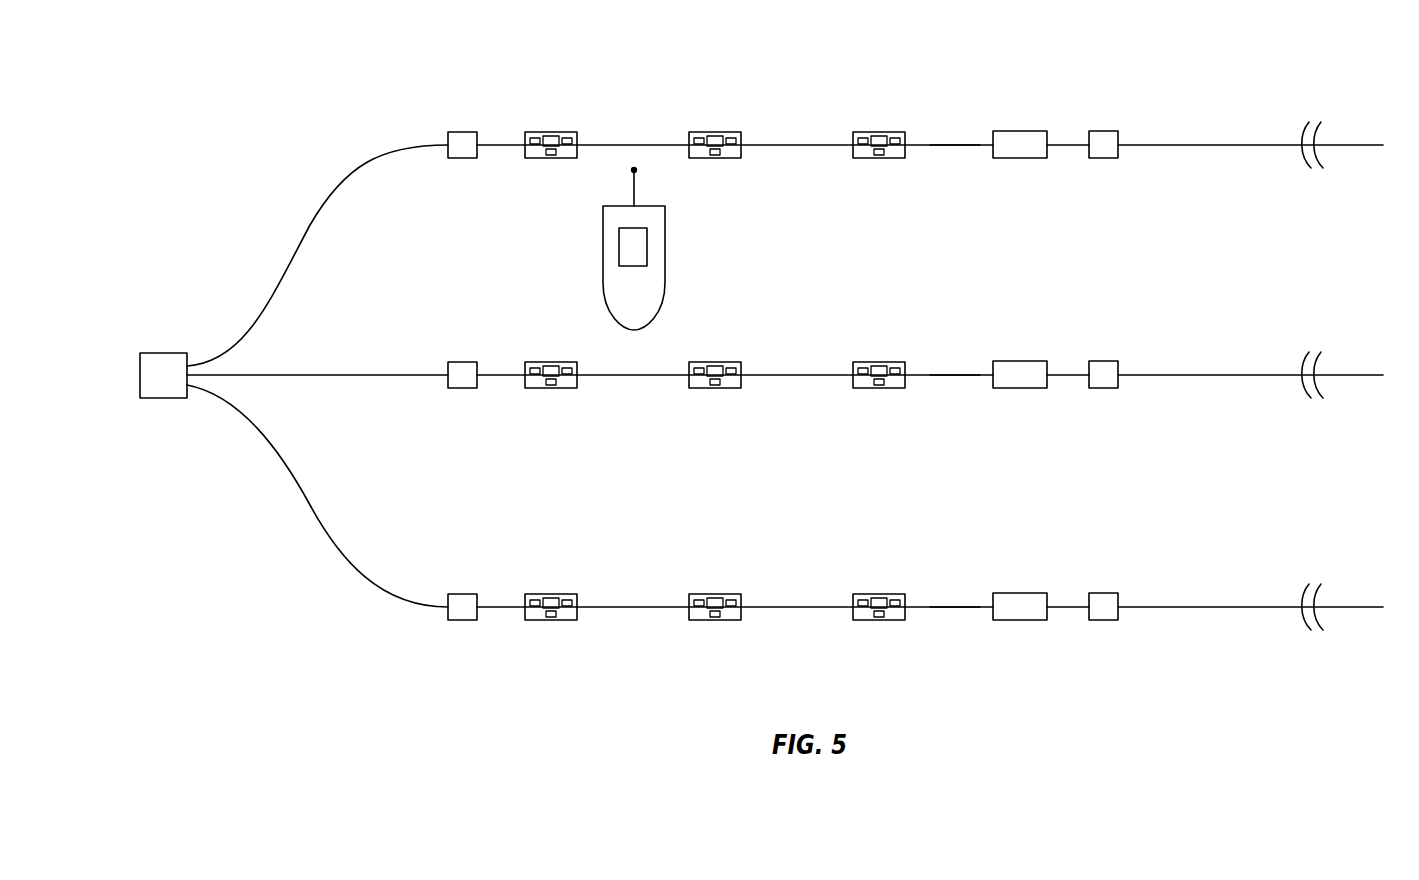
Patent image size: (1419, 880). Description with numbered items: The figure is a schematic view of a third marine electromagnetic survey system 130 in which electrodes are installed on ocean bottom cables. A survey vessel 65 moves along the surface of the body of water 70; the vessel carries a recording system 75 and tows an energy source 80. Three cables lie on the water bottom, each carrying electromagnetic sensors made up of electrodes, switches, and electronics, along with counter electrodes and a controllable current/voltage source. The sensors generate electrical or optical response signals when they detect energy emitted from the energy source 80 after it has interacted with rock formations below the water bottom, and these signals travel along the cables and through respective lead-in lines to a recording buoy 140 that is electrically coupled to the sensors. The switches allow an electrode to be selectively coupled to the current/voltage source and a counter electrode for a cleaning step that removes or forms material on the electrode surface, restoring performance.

The body of water 70 is at (1192, 62).
The third marine electromagnetic survey system 130 is at (392, 681).
The recording buoy 140 is at (162, 353).
The survey vessel 65 is at (603, 250).
The recording system 75 is at (647, 250).
The energy source 80 is at (636, 168).